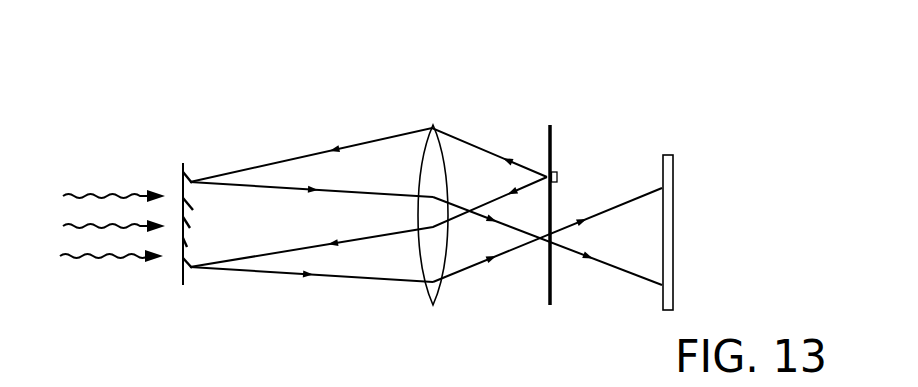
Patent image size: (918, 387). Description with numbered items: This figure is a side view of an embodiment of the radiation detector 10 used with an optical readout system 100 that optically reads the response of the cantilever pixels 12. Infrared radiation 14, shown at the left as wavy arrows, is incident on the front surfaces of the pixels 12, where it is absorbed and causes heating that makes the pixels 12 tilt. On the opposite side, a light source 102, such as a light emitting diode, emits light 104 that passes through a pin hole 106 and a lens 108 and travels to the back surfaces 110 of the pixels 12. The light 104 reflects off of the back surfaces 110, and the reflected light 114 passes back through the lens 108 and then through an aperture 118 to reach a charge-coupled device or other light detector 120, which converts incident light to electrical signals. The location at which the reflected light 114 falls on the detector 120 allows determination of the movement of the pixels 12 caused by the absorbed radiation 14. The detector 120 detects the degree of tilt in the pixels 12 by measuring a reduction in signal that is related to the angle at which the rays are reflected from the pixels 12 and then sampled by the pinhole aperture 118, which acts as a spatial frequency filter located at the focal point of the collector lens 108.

The electromagnetic radiation detector 10 is at (236, 229).
The pixels 12 is at (236, 249).
The infrared radiation 14 is at (106, 167).
The optical readout system 100 is at (461, 216).
The light source 102 is at (557, 177).
The light 104 is at (490, 123).
The pin hole 106 is at (543, 168).
The lens 108 is at (432, 128).
The back surfaces 110 is at (200, 215).
The reflected light 114 is at (297, 310).
The aperture 118 is at (540, 248).
The light detector 120 is at (668, 153).